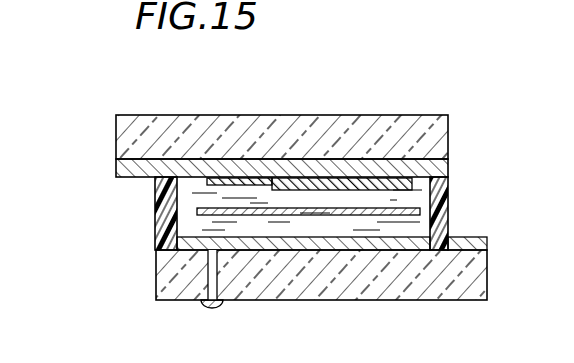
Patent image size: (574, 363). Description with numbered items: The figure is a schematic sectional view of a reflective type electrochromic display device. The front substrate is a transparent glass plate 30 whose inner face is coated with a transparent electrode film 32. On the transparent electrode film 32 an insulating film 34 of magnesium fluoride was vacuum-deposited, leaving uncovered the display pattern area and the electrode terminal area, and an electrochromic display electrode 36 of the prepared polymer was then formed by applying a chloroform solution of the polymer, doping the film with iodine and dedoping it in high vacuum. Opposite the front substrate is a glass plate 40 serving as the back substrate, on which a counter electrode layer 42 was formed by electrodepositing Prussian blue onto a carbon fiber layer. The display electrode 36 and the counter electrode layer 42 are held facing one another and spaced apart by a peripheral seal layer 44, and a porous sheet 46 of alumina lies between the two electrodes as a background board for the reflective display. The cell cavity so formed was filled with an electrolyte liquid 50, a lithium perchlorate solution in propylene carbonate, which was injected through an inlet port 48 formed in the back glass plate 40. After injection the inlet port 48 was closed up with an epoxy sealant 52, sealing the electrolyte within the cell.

The transparent glass plate 30 is at (138, 135).
The transparent electrode film 32 is at (124, 171).
The insulating film 34 is at (212, 180).
The electrochromic display electrode 36 is at (360, 190).
The glass plate 40 is at (388, 285).
The counter electrode layer 42 is at (282, 240).
The peripheral seal layer 44 is at (157, 223).
The porous sheet 46 is at (412, 213).
The inlet port 48 is at (212, 273).
The electrolyte liquid 50 is at (247, 218).
The epoxy sealant 52 is at (212, 306).